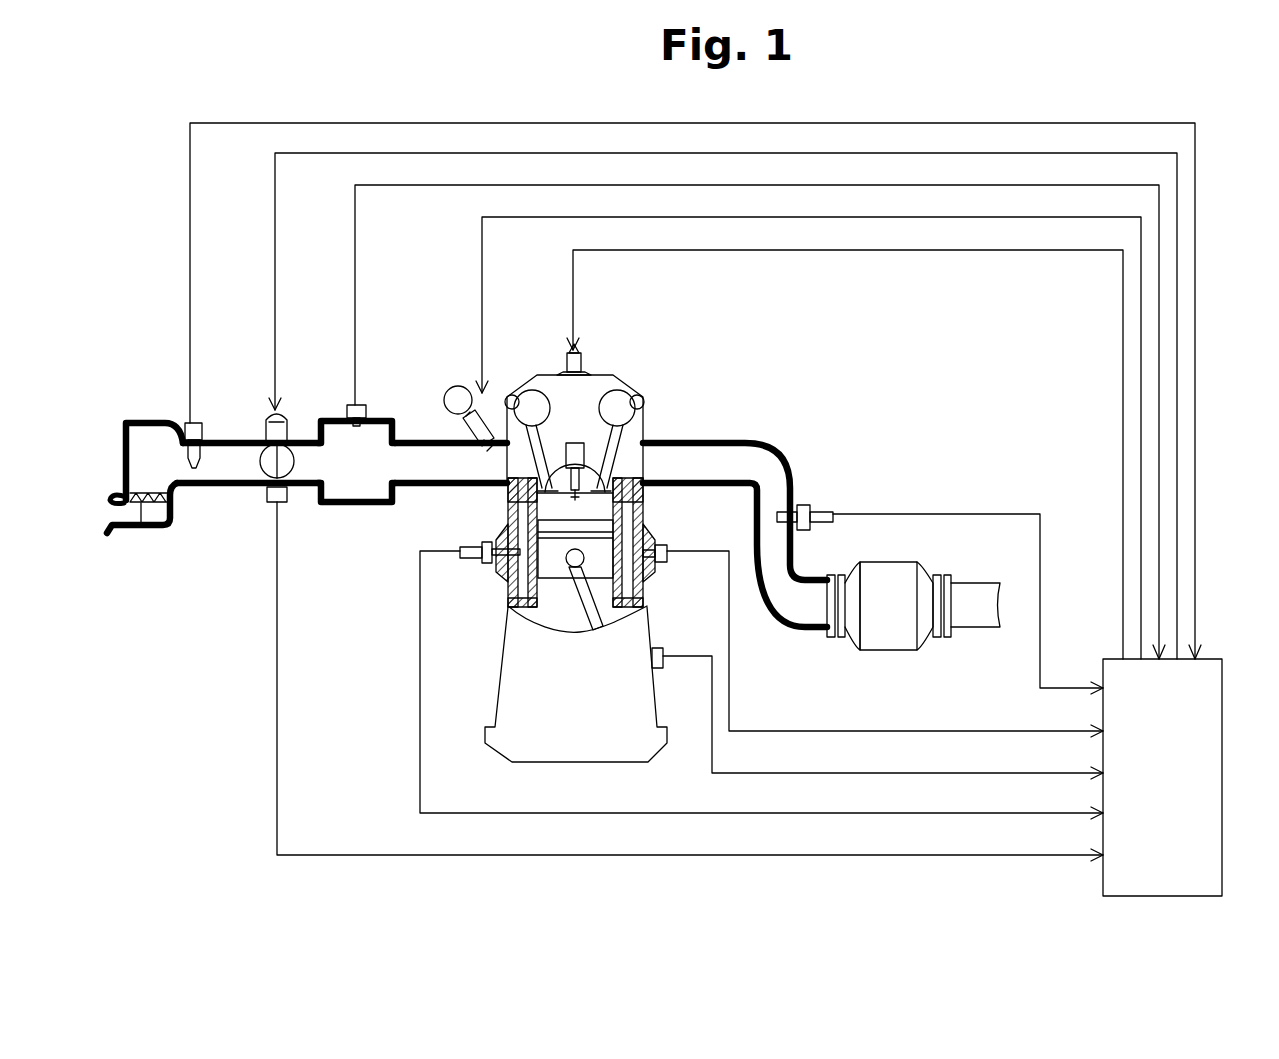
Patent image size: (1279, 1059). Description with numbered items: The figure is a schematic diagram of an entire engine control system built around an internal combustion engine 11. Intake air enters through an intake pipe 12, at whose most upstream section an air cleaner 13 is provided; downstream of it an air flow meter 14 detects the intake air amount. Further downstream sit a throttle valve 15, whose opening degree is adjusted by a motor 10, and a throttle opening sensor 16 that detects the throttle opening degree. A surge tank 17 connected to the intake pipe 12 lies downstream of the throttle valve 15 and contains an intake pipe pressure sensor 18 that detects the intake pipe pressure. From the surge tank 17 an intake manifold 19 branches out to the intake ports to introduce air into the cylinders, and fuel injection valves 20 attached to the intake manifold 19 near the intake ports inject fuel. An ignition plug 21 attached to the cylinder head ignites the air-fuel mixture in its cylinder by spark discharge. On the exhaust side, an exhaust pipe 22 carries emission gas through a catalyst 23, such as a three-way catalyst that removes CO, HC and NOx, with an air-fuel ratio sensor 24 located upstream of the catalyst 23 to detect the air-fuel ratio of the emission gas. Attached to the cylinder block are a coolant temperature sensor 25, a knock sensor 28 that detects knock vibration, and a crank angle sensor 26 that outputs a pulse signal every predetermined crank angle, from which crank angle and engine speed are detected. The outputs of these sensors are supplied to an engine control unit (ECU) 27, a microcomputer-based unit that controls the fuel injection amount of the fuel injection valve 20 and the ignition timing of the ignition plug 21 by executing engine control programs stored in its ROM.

The motor 10 is at (291, 420).
The engine 11 is at (606, 377).
The intake pipe 12 is at (225, 438).
The air cleaner 13 is at (141, 504).
The air flow meter 14 is at (186, 423).
The throttle valve 15 is at (287, 478).
The throttle opening sensor 16 is at (268, 502).
The surge tank 17 is at (324, 419).
The intake pipe pressure sensor 18 is at (362, 405).
The intake manifold 19 is at (406, 438).
The fuel injection valve 20 is at (480, 415).
The ignition plug 21 is at (577, 443).
The exhaust pipe 22 is at (714, 441).
The catalyst 23 is at (896, 562).
The air-fuel ratio sensor 24 is at (805, 506).
The coolant temperature sensor 25 is at (484, 564).
The crank angle sensor 26 is at (660, 648).
The engine control unit (ECU) 27 is at (1224, 706).
The knock sensor 28 is at (666, 545).